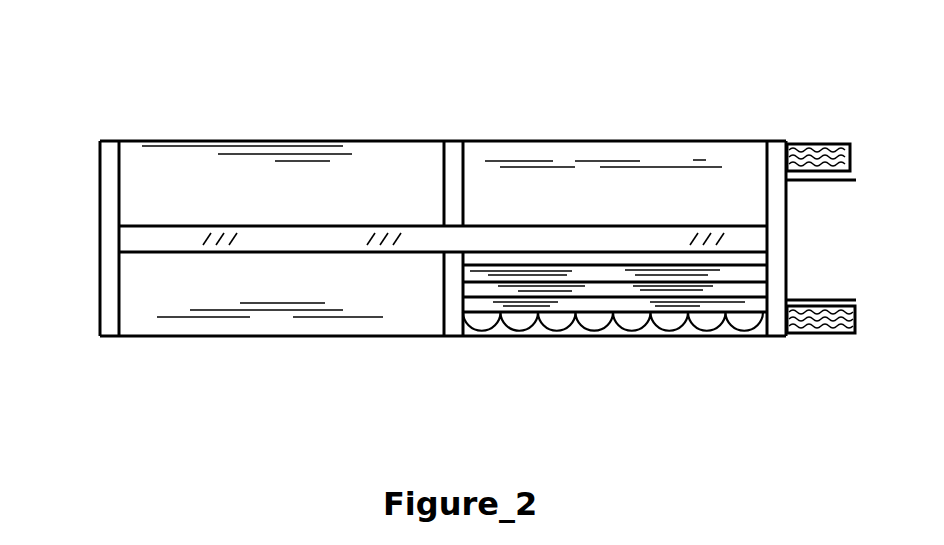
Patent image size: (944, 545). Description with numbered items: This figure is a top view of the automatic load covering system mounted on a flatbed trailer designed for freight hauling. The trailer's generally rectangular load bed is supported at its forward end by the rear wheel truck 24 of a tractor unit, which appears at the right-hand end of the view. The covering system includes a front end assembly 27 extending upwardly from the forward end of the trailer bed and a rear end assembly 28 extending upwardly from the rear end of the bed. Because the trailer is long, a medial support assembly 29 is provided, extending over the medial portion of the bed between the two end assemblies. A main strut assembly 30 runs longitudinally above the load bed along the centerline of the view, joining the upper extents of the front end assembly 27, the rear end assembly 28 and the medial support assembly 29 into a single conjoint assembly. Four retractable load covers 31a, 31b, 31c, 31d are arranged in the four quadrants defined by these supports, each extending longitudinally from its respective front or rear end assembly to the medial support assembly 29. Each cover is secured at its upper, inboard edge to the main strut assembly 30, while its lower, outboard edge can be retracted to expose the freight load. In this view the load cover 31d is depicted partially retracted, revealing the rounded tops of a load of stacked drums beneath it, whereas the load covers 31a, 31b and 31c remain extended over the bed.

The rear wheel truck of a tractor unit 24 is at (827, 147).
The front end assembly 27 is at (777, 152).
The rear end assembly 28 is at (107, 155).
The medial support assembly 29 is at (450, 147).
The main strut assembly 30 is at (293, 238).
The retractable load cover 31a is at (213, 173).
The retractable load cover 31b is at (508, 150).
The retractable load cover 31c is at (298, 285).
The retractable load cover 31d is at (675, 280).